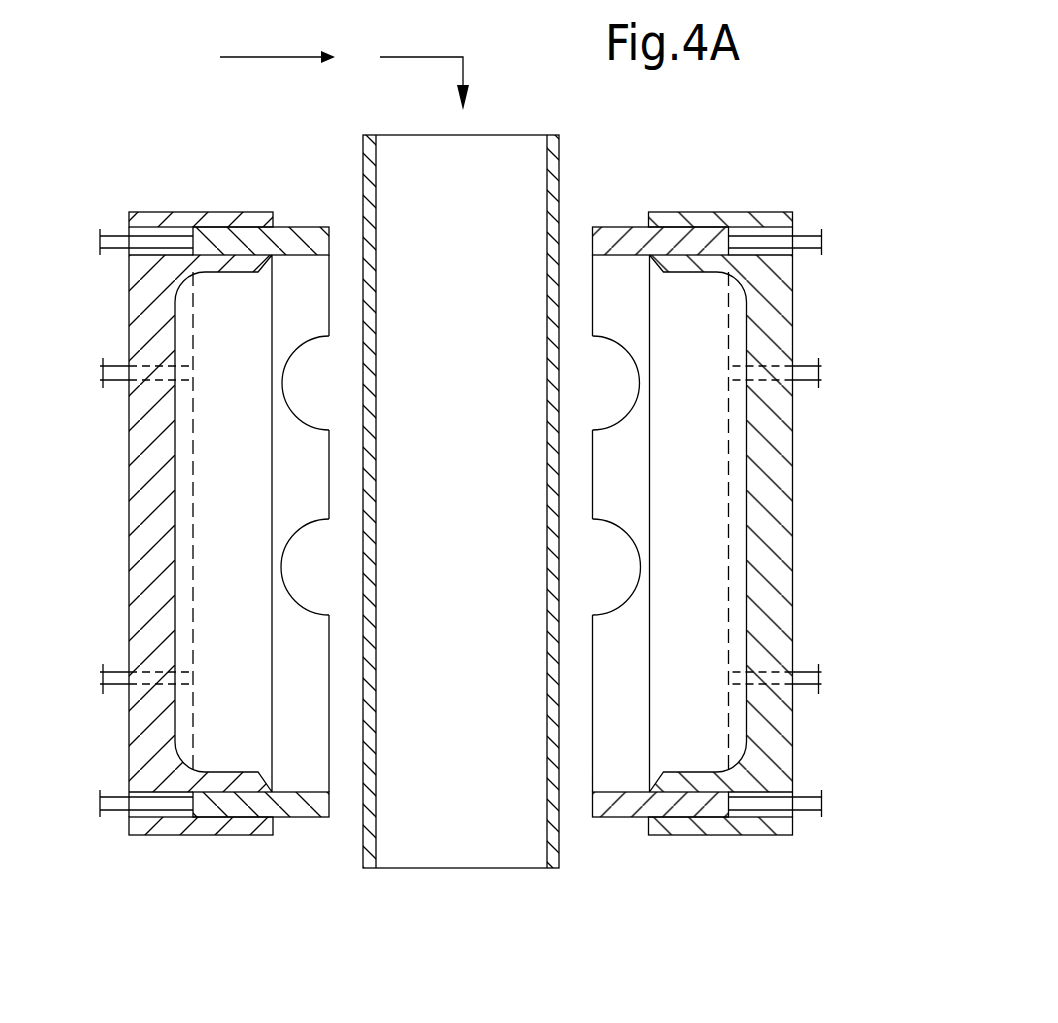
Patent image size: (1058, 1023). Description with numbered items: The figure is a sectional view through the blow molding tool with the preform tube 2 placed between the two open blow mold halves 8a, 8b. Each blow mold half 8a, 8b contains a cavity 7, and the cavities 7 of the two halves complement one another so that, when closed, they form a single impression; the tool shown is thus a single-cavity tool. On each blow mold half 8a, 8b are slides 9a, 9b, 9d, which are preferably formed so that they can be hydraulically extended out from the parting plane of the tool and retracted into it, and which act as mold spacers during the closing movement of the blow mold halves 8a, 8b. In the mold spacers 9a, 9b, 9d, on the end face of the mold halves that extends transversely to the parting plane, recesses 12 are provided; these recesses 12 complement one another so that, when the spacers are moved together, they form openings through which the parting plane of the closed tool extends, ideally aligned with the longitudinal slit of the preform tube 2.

The preform tube 2 is at (553, 160).
The cavity 7 is at (177, 337).
The blow mold half 8a is at (780, 307).
The blow mold half 8b is at (143, 739).
The slide 9a is at (612, 352).
The slide 9b is at (607, 232).
The slide 9d is at (310, 818).
The recess 12 is at (310, 575).